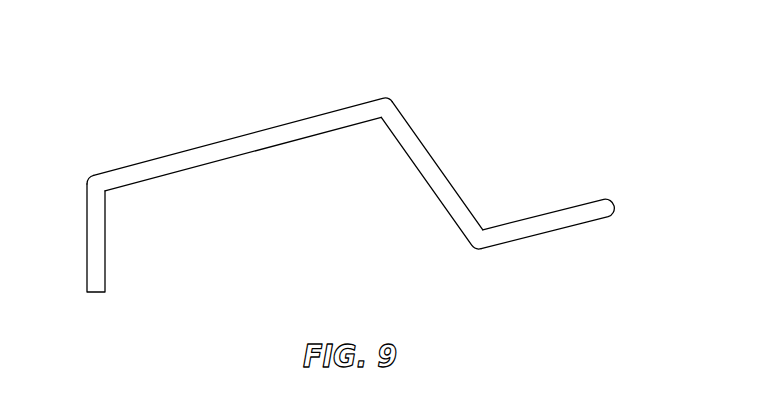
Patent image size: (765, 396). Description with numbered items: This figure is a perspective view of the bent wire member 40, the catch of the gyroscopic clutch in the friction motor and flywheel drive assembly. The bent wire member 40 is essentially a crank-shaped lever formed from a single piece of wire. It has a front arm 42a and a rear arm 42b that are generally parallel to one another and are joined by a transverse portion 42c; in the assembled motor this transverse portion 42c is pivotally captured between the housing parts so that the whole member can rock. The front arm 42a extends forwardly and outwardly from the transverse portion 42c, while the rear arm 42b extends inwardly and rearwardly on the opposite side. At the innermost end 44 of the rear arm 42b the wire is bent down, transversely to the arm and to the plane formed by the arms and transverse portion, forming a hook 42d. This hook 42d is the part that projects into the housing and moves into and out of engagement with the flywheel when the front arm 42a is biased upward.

The bent wire member 40 is at (333, 161).
The front arm 42a is at (558, 210).
The rear arm 42b is at (240, 134).
The transverse portion 42c is at (443, 173).
The hook 42d is at (105, 251).
The innermost end 44 is at (90, 182).